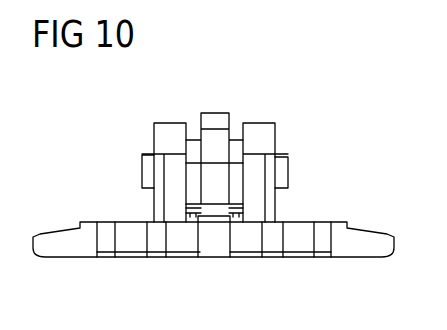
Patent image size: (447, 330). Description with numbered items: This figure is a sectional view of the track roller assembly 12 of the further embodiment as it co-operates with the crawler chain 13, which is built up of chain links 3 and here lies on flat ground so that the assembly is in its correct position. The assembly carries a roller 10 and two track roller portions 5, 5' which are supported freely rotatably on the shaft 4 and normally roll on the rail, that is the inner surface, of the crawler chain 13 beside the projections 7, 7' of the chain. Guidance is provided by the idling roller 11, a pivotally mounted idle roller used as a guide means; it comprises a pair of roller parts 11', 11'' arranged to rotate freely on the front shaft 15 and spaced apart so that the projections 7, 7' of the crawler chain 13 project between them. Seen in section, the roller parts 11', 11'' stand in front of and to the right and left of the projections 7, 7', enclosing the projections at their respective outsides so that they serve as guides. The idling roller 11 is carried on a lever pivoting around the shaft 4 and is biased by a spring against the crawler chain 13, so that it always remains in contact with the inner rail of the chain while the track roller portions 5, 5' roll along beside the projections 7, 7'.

The chain links 3 is at (323, 229).
The shaft 4 is at (145, 172).
The track roller portion 5 is at (164, 147).
The track roller portion 5' is at (265, 148).
The projection 7 is at (199, 263).
The projection 7' is at (244, 263).
The roller 10 is at (217, 118).
The idling roller 11 is at (320, 144).
The roller part 11' is at (136, 203).
The roller part 11'' is at (294, 167).
The track roller assembly 12 is at (281, 122).
The crawler chain 13 is at (363, 222).
The front shaft 15 is at (192, 176).